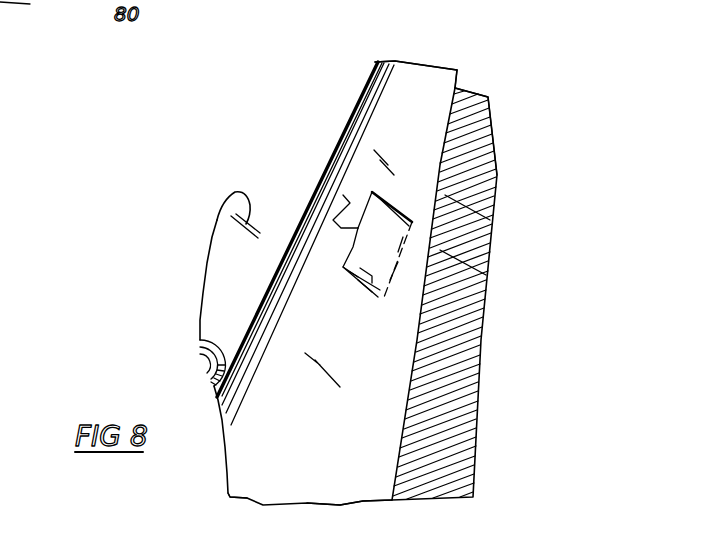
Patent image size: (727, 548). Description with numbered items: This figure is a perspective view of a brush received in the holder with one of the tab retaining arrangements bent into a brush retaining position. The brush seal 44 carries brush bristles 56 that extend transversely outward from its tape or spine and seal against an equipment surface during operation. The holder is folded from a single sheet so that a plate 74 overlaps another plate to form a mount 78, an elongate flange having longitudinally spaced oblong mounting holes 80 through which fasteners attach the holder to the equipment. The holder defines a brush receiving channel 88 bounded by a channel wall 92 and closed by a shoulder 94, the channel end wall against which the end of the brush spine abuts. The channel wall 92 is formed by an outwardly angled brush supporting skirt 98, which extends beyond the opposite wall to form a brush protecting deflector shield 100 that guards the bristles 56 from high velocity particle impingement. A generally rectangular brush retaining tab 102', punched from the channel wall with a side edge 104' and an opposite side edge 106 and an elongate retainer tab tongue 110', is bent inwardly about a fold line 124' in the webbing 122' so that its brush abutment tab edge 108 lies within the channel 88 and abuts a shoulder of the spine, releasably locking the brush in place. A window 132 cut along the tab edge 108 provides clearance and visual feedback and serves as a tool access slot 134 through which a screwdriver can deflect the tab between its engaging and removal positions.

The brush seal 44 is at (486, 85).
The brush bristles 56 is at (481, 122).
The plate 74 is at (248, 203).
The mount 78 is at (231, 216).
The mounting holes 80 is at (213, 350).
The brush receiving channel 88 is at (463, 66).
The channel wall 92 is at (420, 72).
The shoulder 94 is at (263, 298).
The brush supporting skirt 98 is at (230, 498).
The brush protecting deflector shield 100 is at (348, 487).
The side edge 106 is at (354, 272).
The brush abutment tab edge 108 is at (348, 205).
The retainer tab tongue 110' is at (371, 300).
The window 132 is at (343, 205).
The tool access slot 134 is at (345, 200).
The side edge 104' is at (471, 187).
The brush retaining tab 102' is at (479, 246).
The fold line 124' is at (485, 245).
The webbing 122' is at (489, 277).